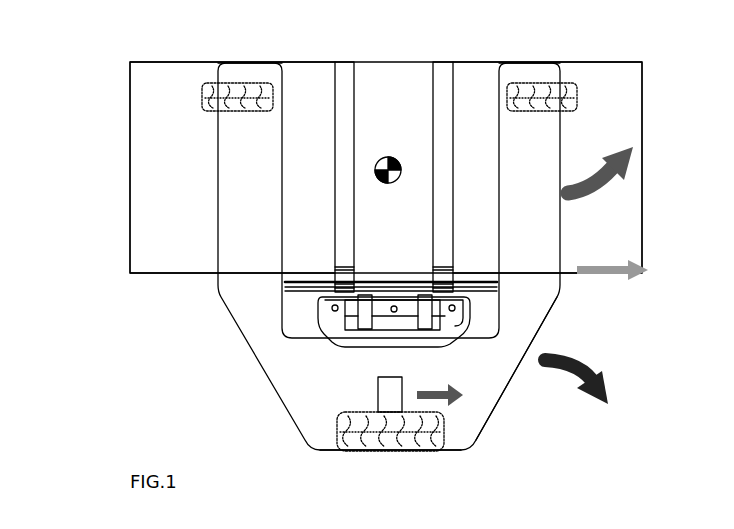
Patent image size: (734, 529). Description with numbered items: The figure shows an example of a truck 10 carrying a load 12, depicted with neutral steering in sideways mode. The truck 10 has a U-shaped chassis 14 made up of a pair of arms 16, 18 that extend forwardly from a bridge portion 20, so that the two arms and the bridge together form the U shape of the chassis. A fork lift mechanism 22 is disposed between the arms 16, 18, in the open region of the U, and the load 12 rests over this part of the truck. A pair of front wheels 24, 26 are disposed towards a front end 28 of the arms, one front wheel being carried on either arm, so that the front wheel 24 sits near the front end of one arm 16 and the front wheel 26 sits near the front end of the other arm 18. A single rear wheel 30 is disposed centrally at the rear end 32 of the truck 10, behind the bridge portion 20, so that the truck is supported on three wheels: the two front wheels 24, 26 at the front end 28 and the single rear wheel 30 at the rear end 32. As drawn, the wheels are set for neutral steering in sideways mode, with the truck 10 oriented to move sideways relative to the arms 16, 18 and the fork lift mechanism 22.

The truck 10 is at (246, 377).
The load 12 is at (643, 86).
The U-shaped chassis 14 is at (285, 407).
The arm 16 is at (222, 168).
The arm 18 is at (502, 180).
The bridge portion 20 is at (486, 418).
The fork lift mechanism 22 is at (436, 88).
The front wheel 24 is at (211, 93).
The front wheel 26 is at (525, 93).
The front end 28 is at (258, 63).
The rear wheel 30 is at (366, 426).
The rear end 32 is at (328, 460).